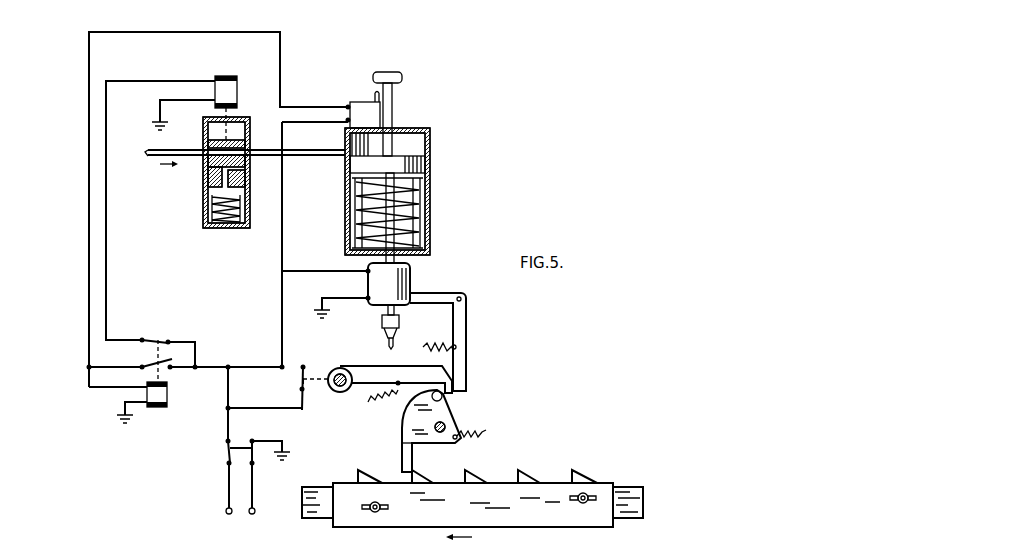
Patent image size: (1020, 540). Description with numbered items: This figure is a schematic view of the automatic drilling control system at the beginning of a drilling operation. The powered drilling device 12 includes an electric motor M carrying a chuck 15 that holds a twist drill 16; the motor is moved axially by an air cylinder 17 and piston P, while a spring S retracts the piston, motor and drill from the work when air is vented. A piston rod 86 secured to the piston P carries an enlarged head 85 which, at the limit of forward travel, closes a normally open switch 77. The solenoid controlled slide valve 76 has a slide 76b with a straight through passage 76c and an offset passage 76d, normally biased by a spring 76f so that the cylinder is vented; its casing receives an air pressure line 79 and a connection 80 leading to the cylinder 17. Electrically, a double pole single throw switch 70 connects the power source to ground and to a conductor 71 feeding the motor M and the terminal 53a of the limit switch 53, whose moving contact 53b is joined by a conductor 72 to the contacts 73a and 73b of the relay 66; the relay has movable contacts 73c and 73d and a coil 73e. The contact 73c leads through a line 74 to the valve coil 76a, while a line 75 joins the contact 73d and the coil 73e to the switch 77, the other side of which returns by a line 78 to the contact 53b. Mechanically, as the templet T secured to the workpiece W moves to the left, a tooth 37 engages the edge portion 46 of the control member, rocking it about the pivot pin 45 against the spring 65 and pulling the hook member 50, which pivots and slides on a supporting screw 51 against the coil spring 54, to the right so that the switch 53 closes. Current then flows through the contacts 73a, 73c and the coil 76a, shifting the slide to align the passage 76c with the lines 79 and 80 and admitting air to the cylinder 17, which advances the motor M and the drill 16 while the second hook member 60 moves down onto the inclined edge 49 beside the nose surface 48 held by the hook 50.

The line 75 is at (170, 32).
The line 74 is at (167, 81).
The coil of solenoid controlled slide valve 76a is at (237, 91).
The solenoid controlled slide valve 76 is at (203, 224).
The slide 76b is at (240, 184).
The straight through passage 76c is at (238, 157).
The zig-zag or offset passage 76d is at (208, 185).
The spring 76f is at (228, 223).
The air pressure line 79 is at (148, 153).
The connection to the air cylinder 80 is at (308, 150).
The line 78 is at (282, 242).
The conductor 71 is at (309, 271).
The switch 77 is at (351, 104).
The enlarged head 85 is at (389, 72).
The piston rod 86 is at (393, 107).
The powered drilling device 12 is at (431, 233).
The piston P is at (426, 166).
The air cylinder 17 is at (422, 189).
The spring S is at (421, 214).
The electric motor M is at (410, 276).
The chuck 15 is at (382, 323).
The twist drill 16 is at (389, 341).
The second hook member 60 is at (466, 330).
The hook member 50 is at (404, 360).
The supporting screw 51 is at (339, 368).
The coil spring 54 is at (382, 406).
The nose or locking surface 48 is at (447, 397).
The outwardly inclined edge 49 is at (462, 416).
The pivot pin 45 is at (434, 427).
The elongated substantially vertical edge portion 46 is at (405, 476).
The spring 65 is at (488, 424).
The workpiece W is at (622, 490).
The tooth 37 is at (420, 482).
The templet T is at (503, 483).
The conductor 72 is at (248, 367).
The limit switch 53 is at (302, 411).
The switch terminal 53a is at (305, 391).
The moving contact 53b is at (300, 388).
The control switch and relay 66 is at (158, 335).
The relay contact 73a is at (180, 333).
The relay contact 73b is at (172, 369).
The movable contact 73c is at (141, 339).
The movable contact 73d is at (141, 367).
The coil of the relay 73e is at (133, 408).
The double pole single throw switch 70 is at (225, 452).